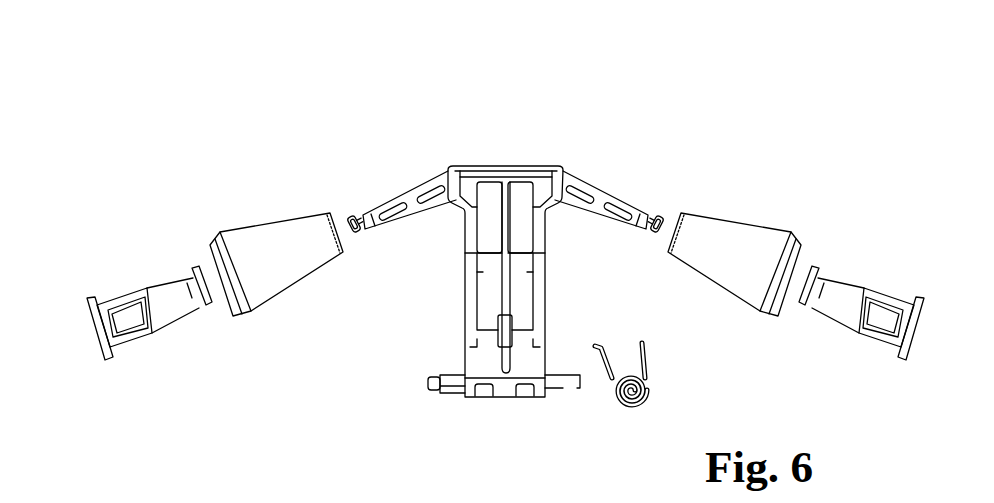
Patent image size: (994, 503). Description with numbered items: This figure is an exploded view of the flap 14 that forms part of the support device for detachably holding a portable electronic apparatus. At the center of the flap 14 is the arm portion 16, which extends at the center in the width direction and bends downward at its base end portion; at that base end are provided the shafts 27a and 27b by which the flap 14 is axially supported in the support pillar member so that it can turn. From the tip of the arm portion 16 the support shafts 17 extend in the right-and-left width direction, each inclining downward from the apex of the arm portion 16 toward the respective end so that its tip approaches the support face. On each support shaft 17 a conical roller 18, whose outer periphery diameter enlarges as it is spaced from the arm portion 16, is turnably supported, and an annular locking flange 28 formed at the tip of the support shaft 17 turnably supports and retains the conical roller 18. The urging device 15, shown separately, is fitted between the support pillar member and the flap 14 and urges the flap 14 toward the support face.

The flap 14 is at (527, 45).
The urging device 15 is at (648, 371).
The arm portion 16 is at (466, 285).
The support shaft 17 is at (418, 187).
The conical roller 18 is at (234, 197).
The shaft 27a is at (565, 388).
The shaft 27b is at (443, 388).
The annular locking flange 28 is at (351, 215).